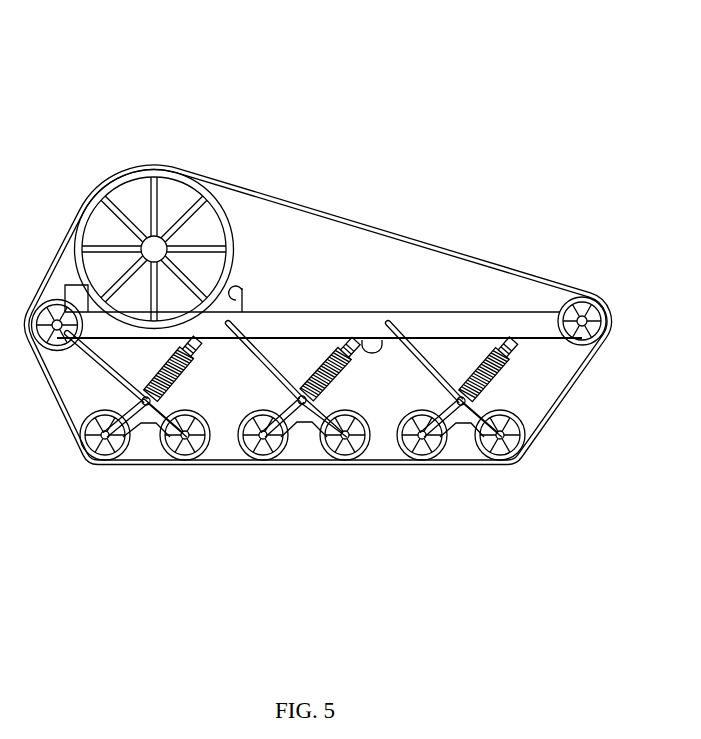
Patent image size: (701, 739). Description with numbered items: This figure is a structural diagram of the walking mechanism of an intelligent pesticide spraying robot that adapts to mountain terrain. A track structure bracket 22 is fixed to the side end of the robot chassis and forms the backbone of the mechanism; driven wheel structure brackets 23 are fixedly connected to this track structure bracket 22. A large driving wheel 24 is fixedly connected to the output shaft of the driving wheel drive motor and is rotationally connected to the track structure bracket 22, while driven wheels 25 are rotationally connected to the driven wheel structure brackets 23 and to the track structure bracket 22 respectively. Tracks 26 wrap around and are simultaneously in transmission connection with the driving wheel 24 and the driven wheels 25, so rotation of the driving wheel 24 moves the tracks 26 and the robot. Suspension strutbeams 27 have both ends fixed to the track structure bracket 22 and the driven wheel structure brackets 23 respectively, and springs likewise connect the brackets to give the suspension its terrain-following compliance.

The track structure bracket 22 is at (337, 312).
The driven wheel structure brackets 23 is at (128, 450).
The driving wheel 24 is at (145, 202).
The driven wheels 25 is at (206, 454).
The tracks 26 is at (443, 254).
The suspension strutbeams 27 is at (492, 388).